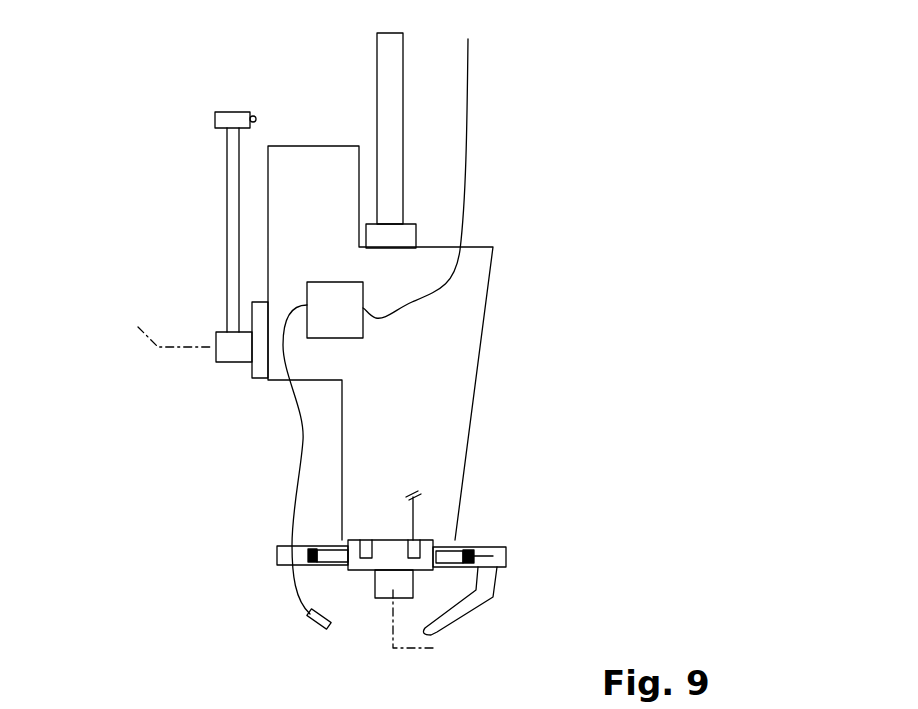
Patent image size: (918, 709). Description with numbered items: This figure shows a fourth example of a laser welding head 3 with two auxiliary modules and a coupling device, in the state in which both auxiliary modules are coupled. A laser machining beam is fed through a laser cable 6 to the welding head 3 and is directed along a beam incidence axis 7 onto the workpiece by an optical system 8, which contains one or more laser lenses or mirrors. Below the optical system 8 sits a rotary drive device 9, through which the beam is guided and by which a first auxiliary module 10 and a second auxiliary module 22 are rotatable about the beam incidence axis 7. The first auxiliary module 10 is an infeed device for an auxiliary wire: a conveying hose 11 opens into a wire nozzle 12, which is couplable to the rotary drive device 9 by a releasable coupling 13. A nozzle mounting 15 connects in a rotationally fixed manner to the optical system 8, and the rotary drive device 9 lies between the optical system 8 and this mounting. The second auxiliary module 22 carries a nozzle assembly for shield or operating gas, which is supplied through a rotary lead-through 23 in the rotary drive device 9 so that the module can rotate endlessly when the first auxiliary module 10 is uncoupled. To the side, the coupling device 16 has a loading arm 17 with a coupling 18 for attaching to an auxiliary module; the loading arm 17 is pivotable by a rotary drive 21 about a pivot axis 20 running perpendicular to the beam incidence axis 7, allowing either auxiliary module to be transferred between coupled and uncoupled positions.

The laser welding head 3 is at (110, 93).
The laser cable 6 is at (391, 55).
The beam incidence axis 7 is at (427, 633).
The optical system 8 is at (445, 320).
The rotary drive device 9 is at (395, 553).
The auxiliary module 10 is at (250, 534).
The conveying hose 11 is at (472, 108).
The wire nozzle 12 is at (305, 617).
The releasable coupling 13 is at (297, 557).
The nozzle mounting 15 is at (390, 583).
The coupling device 16 is at (147, 278).
The loading arm 17 is at (232, 199).
The coupling 18 is at (215, 123).
The pivot axis 20 is at (154, 326).
The rotary drive 21 is at (216, 360).
The second auxiliary module 22 is at (516, 581).
The rotary lead-through 23 is at (415, 552).